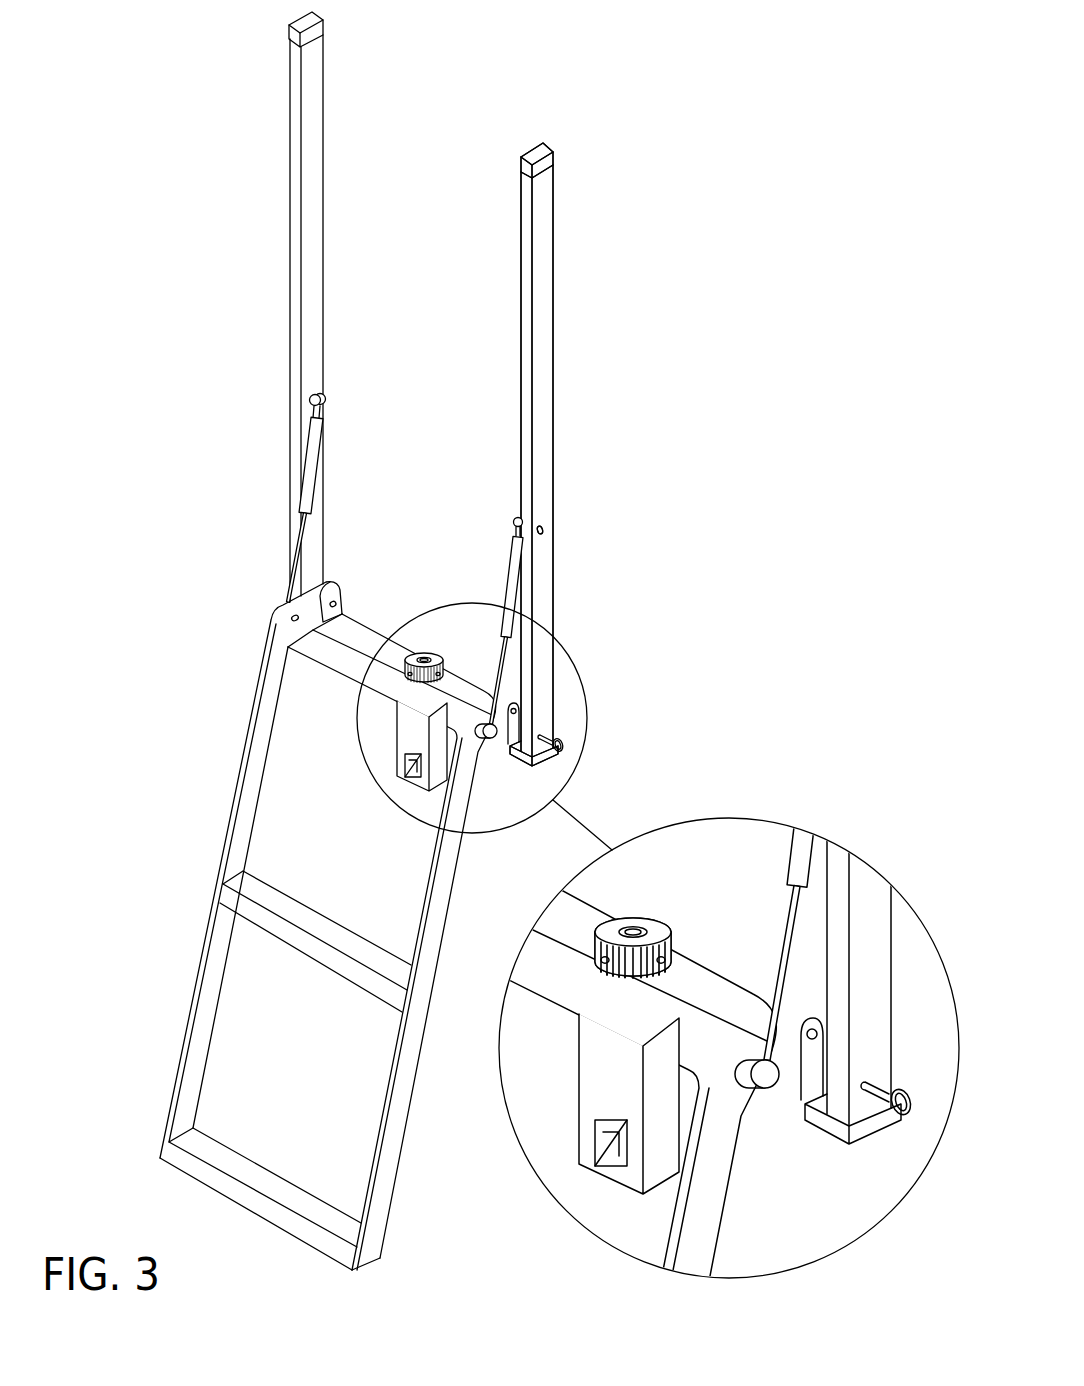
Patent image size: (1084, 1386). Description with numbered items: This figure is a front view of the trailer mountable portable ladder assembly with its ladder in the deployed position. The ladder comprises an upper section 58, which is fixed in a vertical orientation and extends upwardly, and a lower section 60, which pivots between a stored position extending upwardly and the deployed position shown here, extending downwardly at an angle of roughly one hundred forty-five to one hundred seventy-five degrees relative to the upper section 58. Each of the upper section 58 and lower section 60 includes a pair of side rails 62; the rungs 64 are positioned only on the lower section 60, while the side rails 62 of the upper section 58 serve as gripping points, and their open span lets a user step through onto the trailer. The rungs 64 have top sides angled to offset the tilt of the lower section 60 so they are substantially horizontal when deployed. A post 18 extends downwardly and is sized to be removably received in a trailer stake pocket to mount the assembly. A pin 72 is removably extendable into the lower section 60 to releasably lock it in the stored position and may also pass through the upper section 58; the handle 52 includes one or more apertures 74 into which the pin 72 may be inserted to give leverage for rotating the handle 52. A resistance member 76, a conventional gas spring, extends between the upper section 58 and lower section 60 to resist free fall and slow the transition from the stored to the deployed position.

The post 18 is at (398, 727).
The handle 52 is at (641, 911).
The upper section 58 is at (598, 376).
The lower section 60 is at (178, 926).
The side rails 62 is at (295, 168).
The rungs 64 is at (358, 985).
The pin 72 is at (884, 1090).
The apertures 74 is at (692, 941).
The resistance member 76 is at (313, 460).